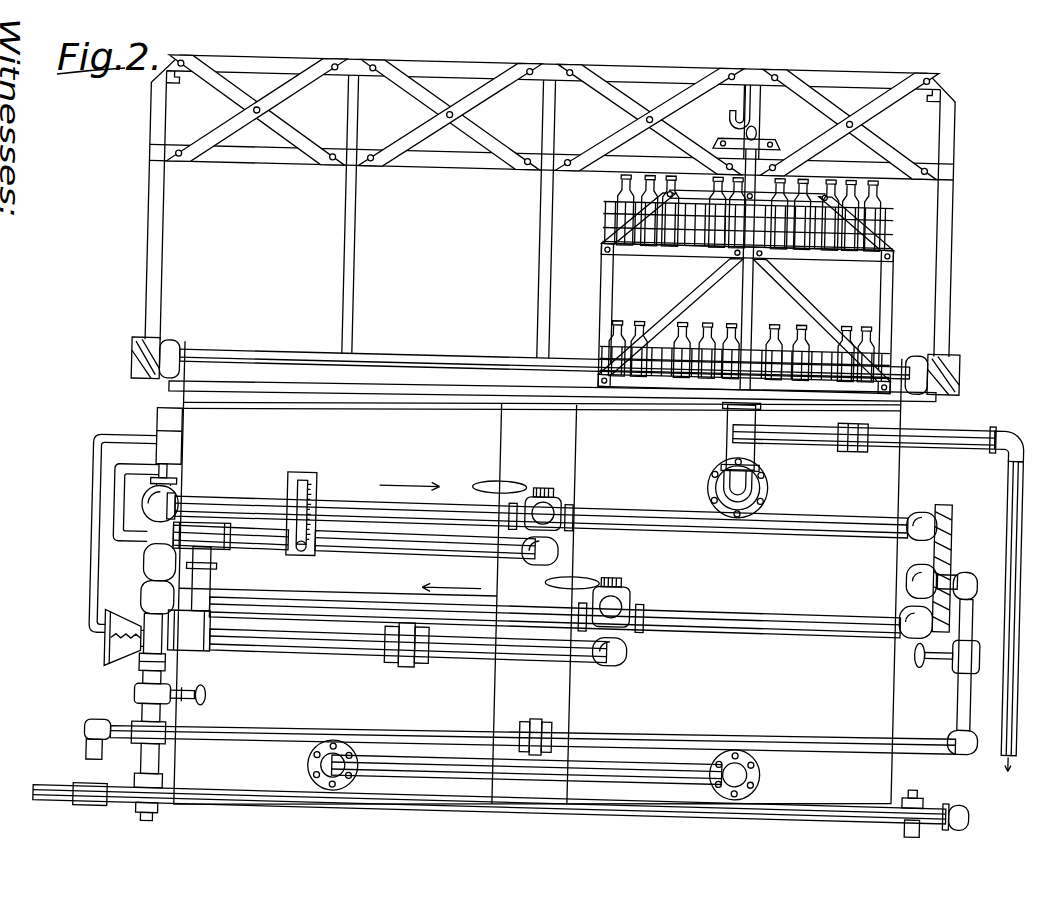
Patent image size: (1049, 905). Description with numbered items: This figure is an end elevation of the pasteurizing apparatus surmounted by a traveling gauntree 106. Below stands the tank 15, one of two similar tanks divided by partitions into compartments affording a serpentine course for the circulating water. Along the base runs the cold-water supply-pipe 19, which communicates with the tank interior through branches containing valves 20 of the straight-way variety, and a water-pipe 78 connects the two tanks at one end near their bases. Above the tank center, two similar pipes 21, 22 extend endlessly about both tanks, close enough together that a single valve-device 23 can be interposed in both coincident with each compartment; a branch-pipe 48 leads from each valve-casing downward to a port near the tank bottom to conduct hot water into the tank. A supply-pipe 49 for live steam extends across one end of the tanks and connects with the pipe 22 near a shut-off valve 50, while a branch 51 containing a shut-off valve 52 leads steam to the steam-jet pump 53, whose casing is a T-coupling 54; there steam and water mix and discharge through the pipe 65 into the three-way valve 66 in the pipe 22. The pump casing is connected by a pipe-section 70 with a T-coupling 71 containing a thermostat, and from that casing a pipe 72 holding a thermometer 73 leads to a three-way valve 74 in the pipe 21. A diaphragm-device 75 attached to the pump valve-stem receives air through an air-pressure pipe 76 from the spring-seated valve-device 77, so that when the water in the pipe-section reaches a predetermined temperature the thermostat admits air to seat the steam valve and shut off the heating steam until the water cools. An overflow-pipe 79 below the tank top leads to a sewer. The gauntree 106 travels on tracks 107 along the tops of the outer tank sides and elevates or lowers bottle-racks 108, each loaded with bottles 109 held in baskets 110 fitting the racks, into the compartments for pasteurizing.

The tank 15 is at (548, 582).
The cold-water supply-pipe 19 is at (283, 803).
The valve 20 is at (175, 806).
The pipe 21 is at (684, 529).
The pipe 22 is at (765, 626).
The valve-device 23 is at (179, 496).
The branch-pipe 48 is at (157, 626).
The supply-pipe for live steam 49 is at (468, 730).
The shut-off valve 50 is at (966, 652).
The branch 51 is at (171, 675).
The shut-off valve 52 is at (143, 706).
The steam-jet pump 53 is at (222, 656).
The T-coupling 54 is at (212, 703).
The pipe 65 is at (543, 661).
The three-way valve 66 is at (630, 592).
The pipe-section 70 is at (216, 583).
The T-coupling 71 is at (213, 536).
The pipe 72 is at (417, 558).
The thermometer 73 is at (318, 494).
The three-way valve 74 is at (561, 505).
The diaphragm-device 75 is at (110, 652).
The air-pressure pipe 76 is at (83, 575).
The spring-seated valve-device 77 is at (157, 450).
The water-pipe 78 is at (636, 760).
The overflow-pipe 79 is at (1011, 479).
The gauntree 106 is at (519, 210).
The track 107 is at (172, 388).
The bottle-rack 108 is at (877, 272).
The bottle 109 is at (868, 188).
The basket 110 is at (871, 230).